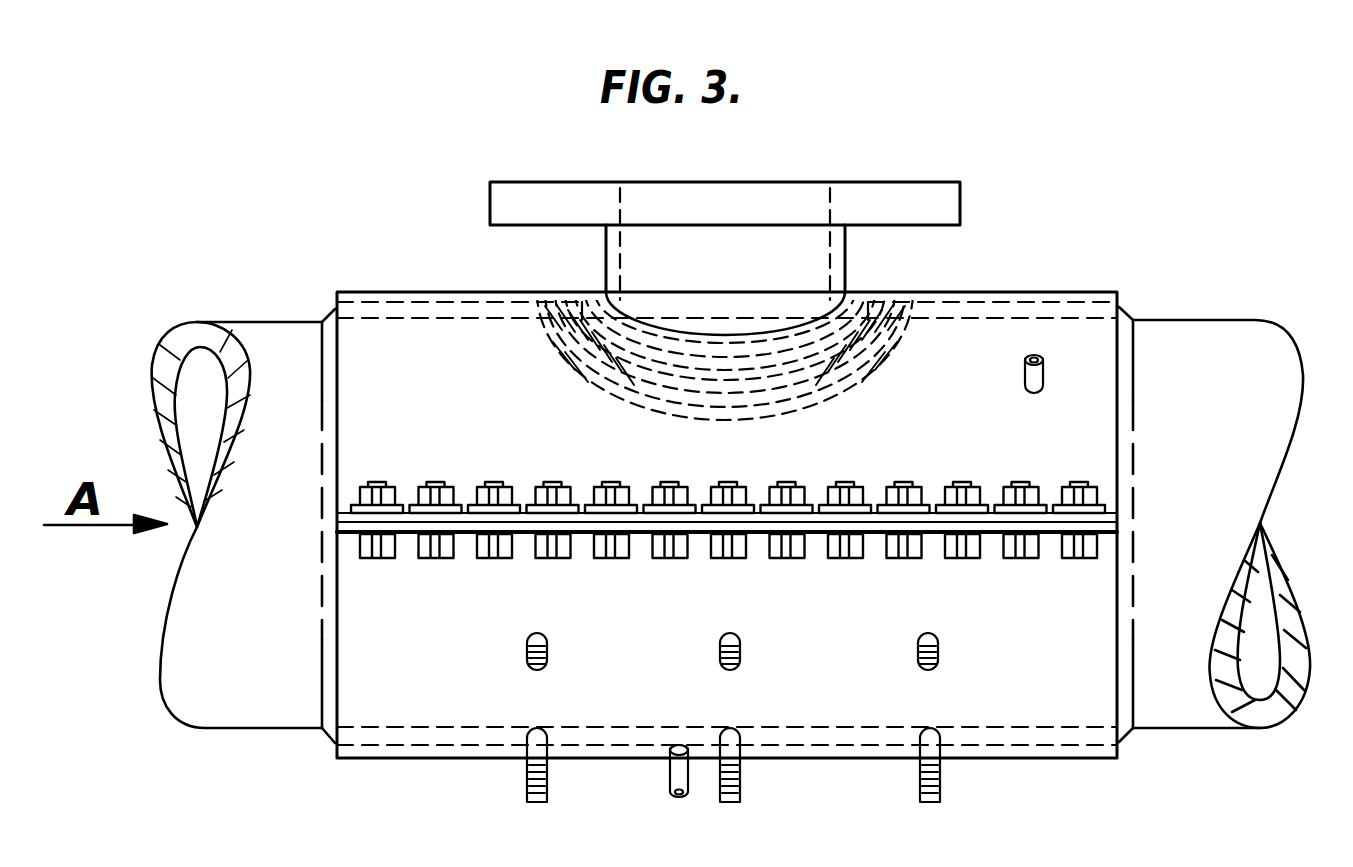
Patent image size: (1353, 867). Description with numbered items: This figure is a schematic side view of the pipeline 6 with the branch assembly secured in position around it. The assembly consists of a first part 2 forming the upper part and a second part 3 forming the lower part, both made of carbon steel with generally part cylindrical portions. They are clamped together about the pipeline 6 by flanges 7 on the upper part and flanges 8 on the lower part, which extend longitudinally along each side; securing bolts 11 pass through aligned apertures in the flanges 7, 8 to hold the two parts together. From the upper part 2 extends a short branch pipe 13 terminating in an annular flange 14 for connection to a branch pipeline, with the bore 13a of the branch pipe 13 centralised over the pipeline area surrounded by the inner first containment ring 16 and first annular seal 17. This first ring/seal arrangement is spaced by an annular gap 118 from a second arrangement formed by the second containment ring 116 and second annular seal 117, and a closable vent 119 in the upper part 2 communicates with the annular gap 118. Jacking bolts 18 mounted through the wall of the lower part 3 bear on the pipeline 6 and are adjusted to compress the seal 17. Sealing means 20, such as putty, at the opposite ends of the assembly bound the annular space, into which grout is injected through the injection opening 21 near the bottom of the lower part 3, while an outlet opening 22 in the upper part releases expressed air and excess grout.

The first part 2 is at (978, 345).
The second part 3 is at (1026, 715).
The pipeline 6 is at (1263, 458).
The flanges 7 is at (346, 504).
The flanges 8 is at (352, 543).
The securing bolts 11 is at (1077, 486).
The branch pipe 13 is at (848, 262).
The bore 13a is at (717, 253).
The annular flange 14 is at (908, 195).
The first containment ring 16 is at (890, 357).
The first annular seal 17 is at (670, 350).
The jacking bolts 18 is at (720, 663).
The sealing means 20 is at (323, 735).
The injection opening 21 is at (664, 745).
The outlet opening 22 is at (1025, 387).
The second containment ring 116 is at (828, 408).
The second annular seal 117 is at (587, 380).
The annular gap 118 is at (746, 385).
The closable vent 119 is at (613, 352).